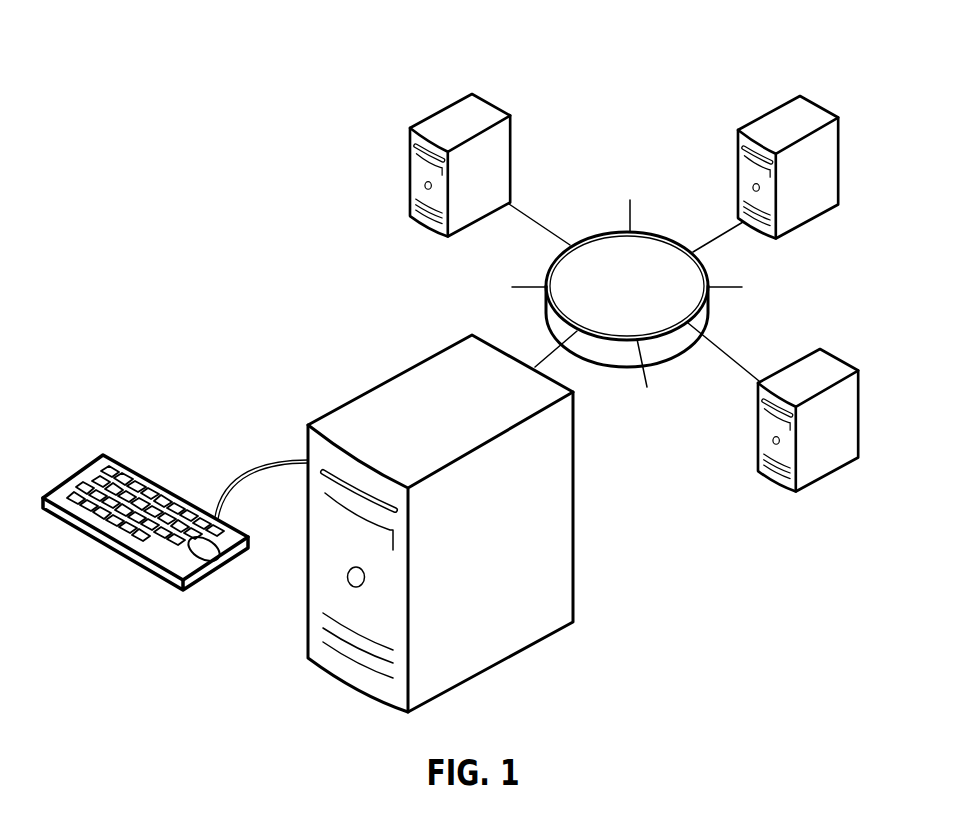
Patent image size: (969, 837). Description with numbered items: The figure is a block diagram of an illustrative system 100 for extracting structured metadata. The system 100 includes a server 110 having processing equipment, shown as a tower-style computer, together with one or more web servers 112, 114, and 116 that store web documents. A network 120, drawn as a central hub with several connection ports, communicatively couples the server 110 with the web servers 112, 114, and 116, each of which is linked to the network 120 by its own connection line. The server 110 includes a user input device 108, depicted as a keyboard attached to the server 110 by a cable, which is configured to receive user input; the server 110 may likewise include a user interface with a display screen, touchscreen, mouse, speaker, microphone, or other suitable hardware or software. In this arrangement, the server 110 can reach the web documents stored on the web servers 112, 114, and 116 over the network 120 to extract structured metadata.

The system 100 is at (453, 29).
The user input device 108 is at (127, 468).
The server 110 is at (393, 436).
The web server 112 is at (461, 186).
The web server 114 is at (789, 187).
The web server 116 is at (809, 444).
The network 120 is at (608, 297).